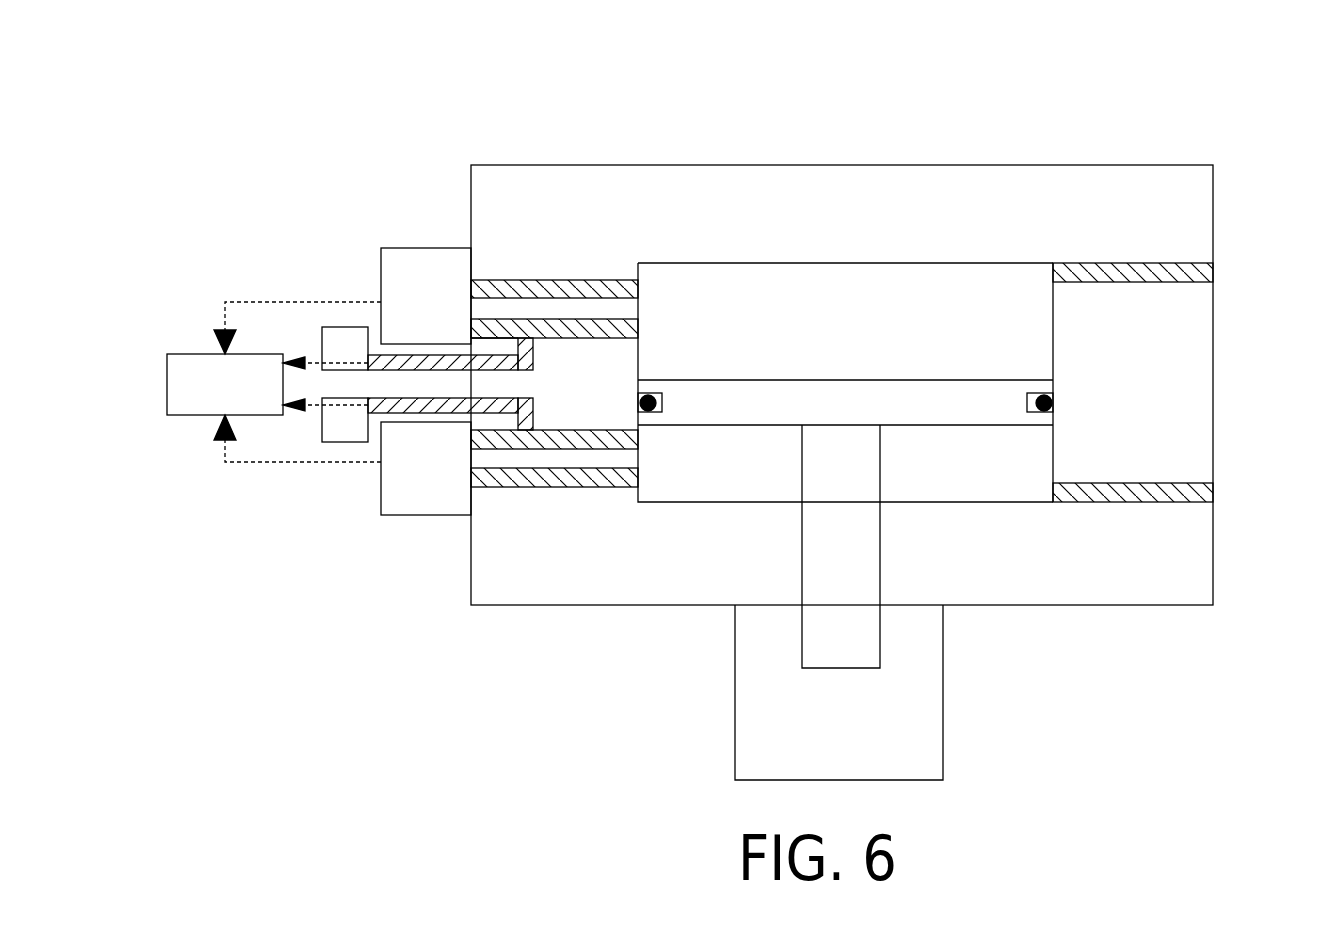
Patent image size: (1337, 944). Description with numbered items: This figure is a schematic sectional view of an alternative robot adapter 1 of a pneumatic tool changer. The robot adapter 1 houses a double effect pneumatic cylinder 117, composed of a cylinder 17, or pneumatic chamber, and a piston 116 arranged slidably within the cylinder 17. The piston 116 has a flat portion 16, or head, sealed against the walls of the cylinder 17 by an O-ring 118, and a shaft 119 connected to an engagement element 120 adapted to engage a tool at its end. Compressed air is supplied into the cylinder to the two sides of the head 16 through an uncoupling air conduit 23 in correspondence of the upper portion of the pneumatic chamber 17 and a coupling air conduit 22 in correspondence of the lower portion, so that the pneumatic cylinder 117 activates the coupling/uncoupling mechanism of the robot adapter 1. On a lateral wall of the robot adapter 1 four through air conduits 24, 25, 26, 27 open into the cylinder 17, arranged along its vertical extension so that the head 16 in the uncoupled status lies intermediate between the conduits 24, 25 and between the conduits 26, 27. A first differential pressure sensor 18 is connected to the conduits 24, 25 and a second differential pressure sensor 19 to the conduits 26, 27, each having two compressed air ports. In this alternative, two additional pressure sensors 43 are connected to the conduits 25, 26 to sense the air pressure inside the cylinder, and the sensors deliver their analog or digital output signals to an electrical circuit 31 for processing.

The robot adapter 1 is at (1204, 117).
The flat portion 16 is at (758, 383).
The cylinder 17 is at (975, 492).
The first differential pressure sensor 18 is at (398, 265).
The second differential pressure sensor 19 is at (428, 508).
The coupling air conduit 22 is at (1183, 490).
The uncoupling air conduit 23 is at (1178, 268).
The air conduit 24 is at (512, 283).
The air conduit 25 is at (597, 322).
The air conduit 26 is at (605, 440).
The air conduit 27 is at (545, 488).
The electrical circuit 31 is at (190, 360).
The additional pressure sensors 43 is at (340, 337).
The piston 116 is at (922, 353).
The double effect pneumatic cylinder 117 is at (1215, 337).
The O-ring 118 is at (1052, 401).
The shaft 119 is at (812, 568).
The engagement element 120 is at (755, 740).